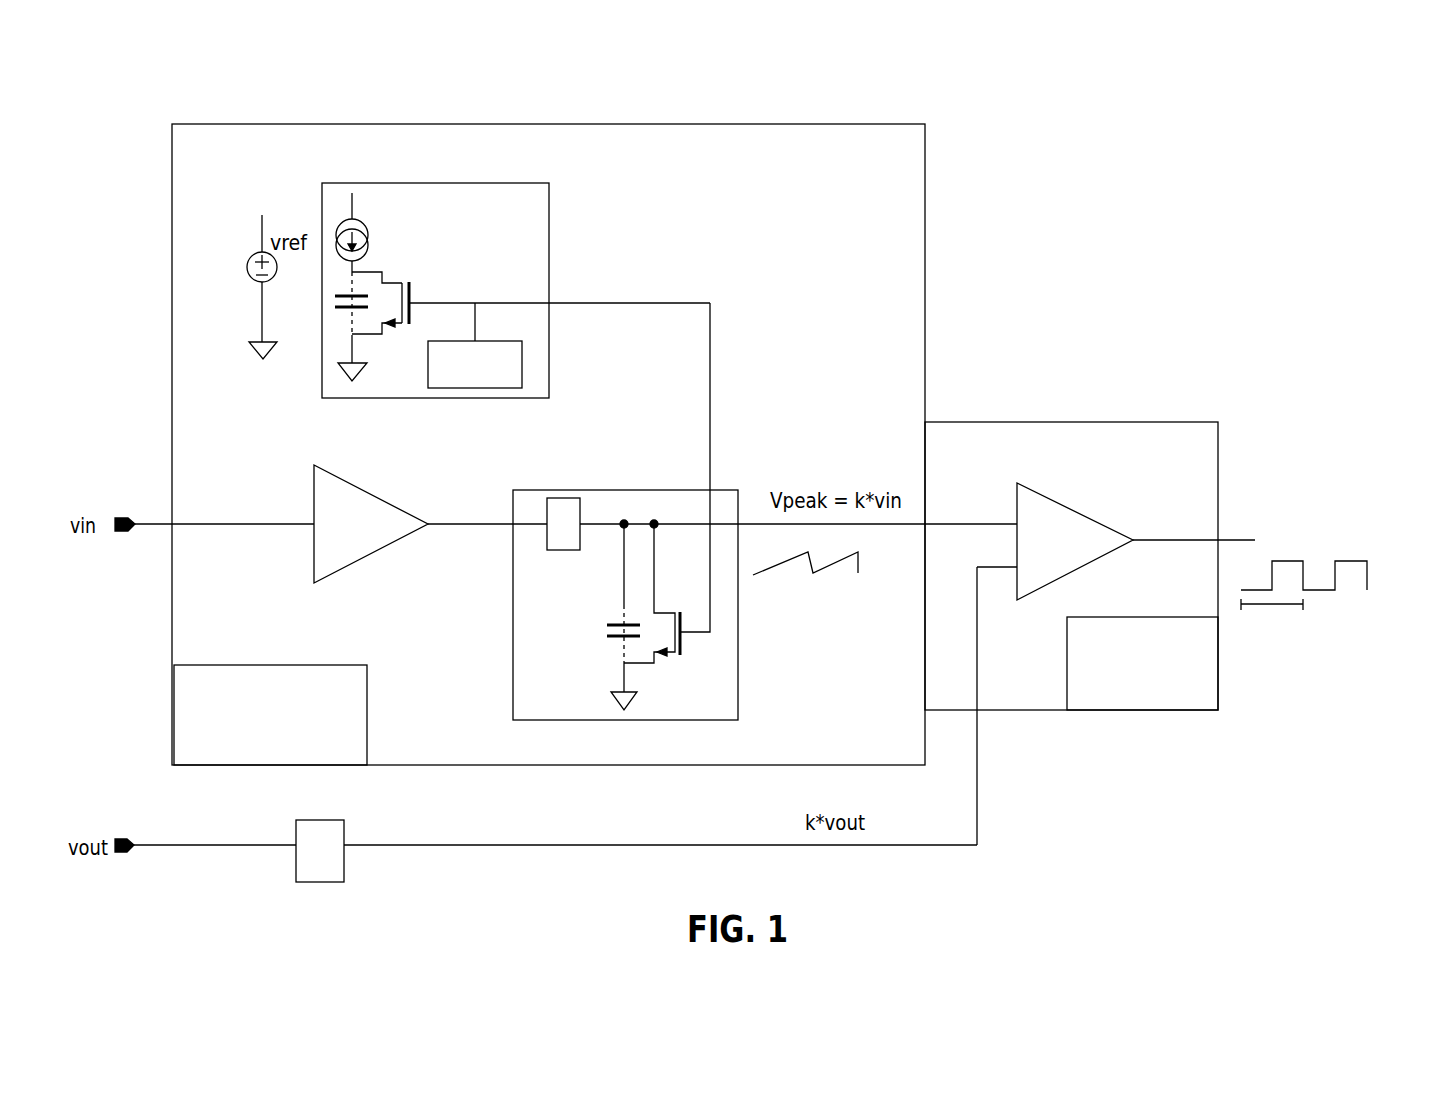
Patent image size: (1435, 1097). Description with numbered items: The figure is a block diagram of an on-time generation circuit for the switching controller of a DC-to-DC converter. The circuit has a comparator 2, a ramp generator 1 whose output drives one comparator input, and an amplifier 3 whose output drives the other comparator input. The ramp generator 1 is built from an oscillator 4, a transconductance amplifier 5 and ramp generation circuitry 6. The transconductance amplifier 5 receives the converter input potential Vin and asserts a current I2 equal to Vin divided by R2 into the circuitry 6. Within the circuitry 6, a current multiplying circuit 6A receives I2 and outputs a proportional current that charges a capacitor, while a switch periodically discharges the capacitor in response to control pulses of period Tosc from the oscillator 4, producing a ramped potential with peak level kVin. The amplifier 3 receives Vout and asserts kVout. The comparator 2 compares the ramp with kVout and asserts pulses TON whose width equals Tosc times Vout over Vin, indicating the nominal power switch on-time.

The ramp generator 1 is at (630, 766).
The comparator 2 is at (1073, 508).
The amplifier 3 is at (325, 882).
The oscillator 4 is at (548, 229).
The transconductance amplifier 5 is at (376, 493).
The ramp generation circuitry 6 is at (634, 511).
The current multiplying circuit 6A is at (564, 498).